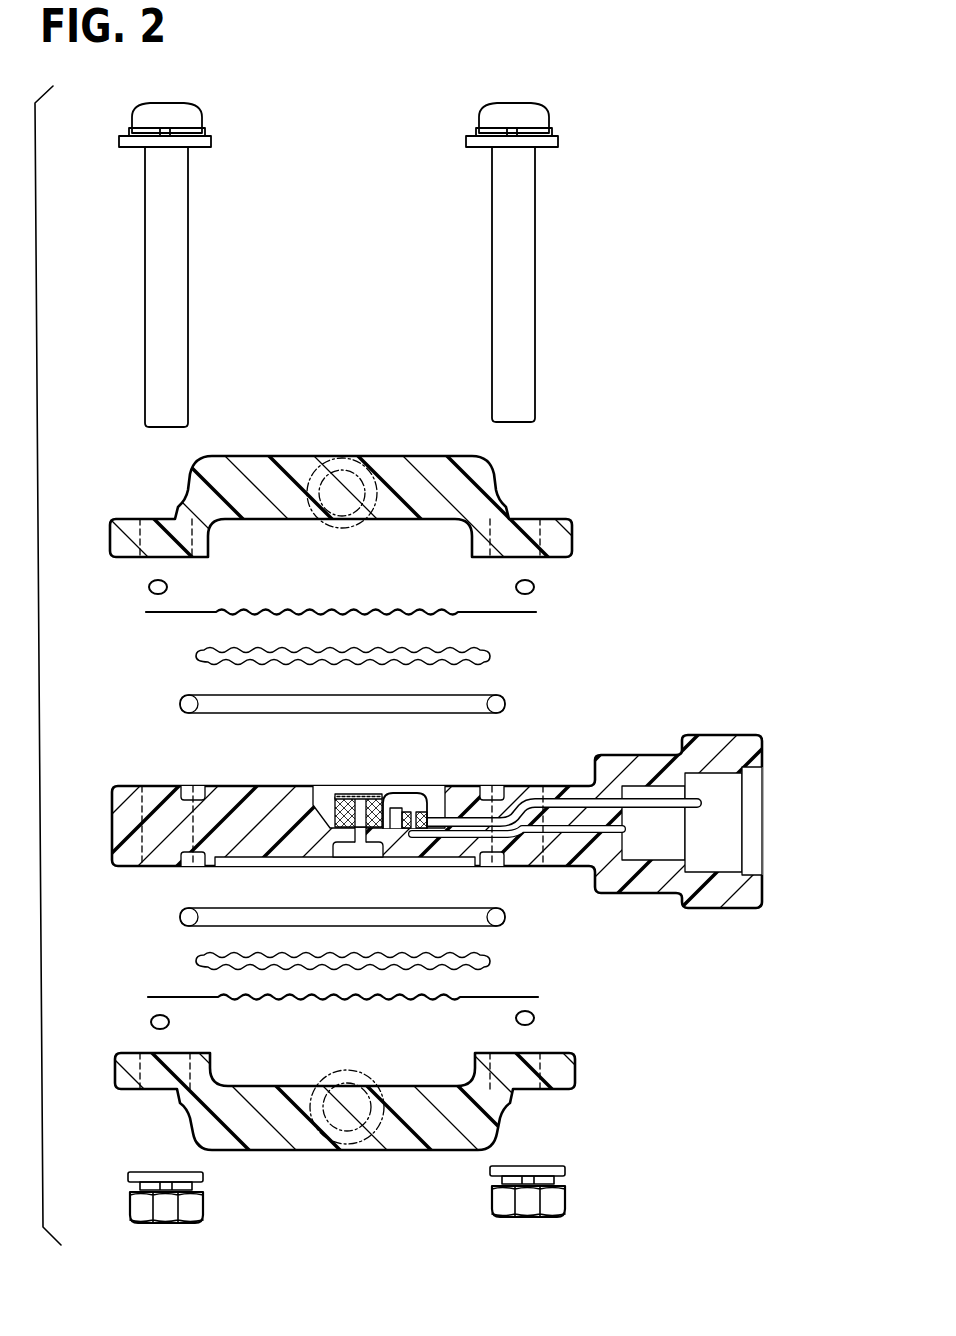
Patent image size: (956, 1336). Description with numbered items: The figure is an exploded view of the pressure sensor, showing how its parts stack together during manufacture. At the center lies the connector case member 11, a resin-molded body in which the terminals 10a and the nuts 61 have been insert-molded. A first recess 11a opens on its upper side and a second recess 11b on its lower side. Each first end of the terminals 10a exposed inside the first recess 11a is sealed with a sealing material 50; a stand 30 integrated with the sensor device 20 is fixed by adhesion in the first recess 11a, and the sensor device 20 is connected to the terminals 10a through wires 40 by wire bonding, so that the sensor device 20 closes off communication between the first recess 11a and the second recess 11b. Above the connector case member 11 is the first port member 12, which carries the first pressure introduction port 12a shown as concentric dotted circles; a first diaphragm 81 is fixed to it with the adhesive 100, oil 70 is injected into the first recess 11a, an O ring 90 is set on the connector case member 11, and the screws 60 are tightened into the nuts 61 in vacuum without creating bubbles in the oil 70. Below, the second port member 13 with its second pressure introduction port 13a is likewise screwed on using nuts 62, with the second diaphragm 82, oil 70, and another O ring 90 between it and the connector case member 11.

The terminals 10a is at (700, 807).
The connector case member 11 is at (475, 830).
The first recess 11a is at (322, 814).
The second recess 11b is at (345, 857).
The first port member 12 is at (487, 480).
The first pressure introduction port 12a is at (352, 458).
The second port member 13 is at (480, 1122).
The second pressure introduction port 13a is at (362, 1146).
The sensor device 20 is at (352, 795).
The stand 30 is at (342, 806).
The wires 40 is at (395, 794).
The sealing material 50 is at (422, 812).
The screws 60 is at (160, 207).
The nuts 61 is at (140, 803).
The nuts 62 is at (135, 1200).
The oil 70 is at (196, 655).
The first diaphragm 81 is at (505, 614).
The second diaphragm 82 is at (505, 995).
The O ring 90 is at (186, 701).
The adhesive 100 is at (534, 584).